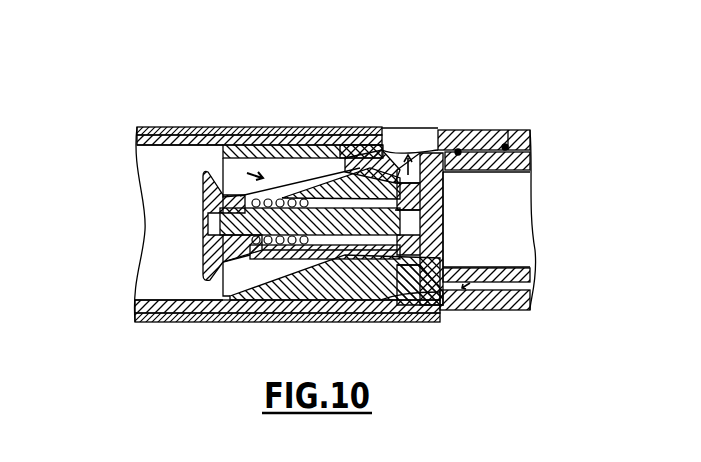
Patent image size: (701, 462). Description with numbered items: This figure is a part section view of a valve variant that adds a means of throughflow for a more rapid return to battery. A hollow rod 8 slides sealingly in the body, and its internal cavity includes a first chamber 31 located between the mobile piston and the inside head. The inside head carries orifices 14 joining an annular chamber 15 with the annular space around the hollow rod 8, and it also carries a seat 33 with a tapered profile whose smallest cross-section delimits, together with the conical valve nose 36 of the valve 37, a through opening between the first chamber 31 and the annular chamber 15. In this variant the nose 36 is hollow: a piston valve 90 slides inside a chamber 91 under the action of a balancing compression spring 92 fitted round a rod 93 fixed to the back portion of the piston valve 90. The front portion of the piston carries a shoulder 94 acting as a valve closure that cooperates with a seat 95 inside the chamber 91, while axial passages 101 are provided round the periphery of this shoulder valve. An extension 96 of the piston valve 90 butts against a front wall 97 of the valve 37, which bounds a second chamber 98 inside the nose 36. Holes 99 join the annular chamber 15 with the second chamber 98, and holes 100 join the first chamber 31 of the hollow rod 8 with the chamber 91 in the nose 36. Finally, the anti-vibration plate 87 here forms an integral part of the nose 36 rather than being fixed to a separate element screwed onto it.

The hollow rod 8 is at (153, 127).
The first chamber 31 is at (165, 183).
The anti-vibration plate 87 is at (220, 193).
The rod 93 is at (240, 198).
The holes 100 is at (270, 188).
The chamber 91 is at (300, 198).
The valve nose 36 is at (336, 135).
The piston valve 90 is at (352, 172).
The annular chamber 15 is at (378, 165).
The holes 99 is at (420, 147).
The orifices 14 is at (440, 149).
The second chamber 98 is at (456, 152).
The valve 37 is at (505, 147).
The front wall 97 is at (443, 205).
The balancing compression spring 92 is at (268, 253).
The seat 33 is at (270, 298).
The seat 95 is at (383, 290).
The shoulder 94 is at (400, 272).
The axial passages 101 is at (415, 285).
The extension 96 is at (427, 240).